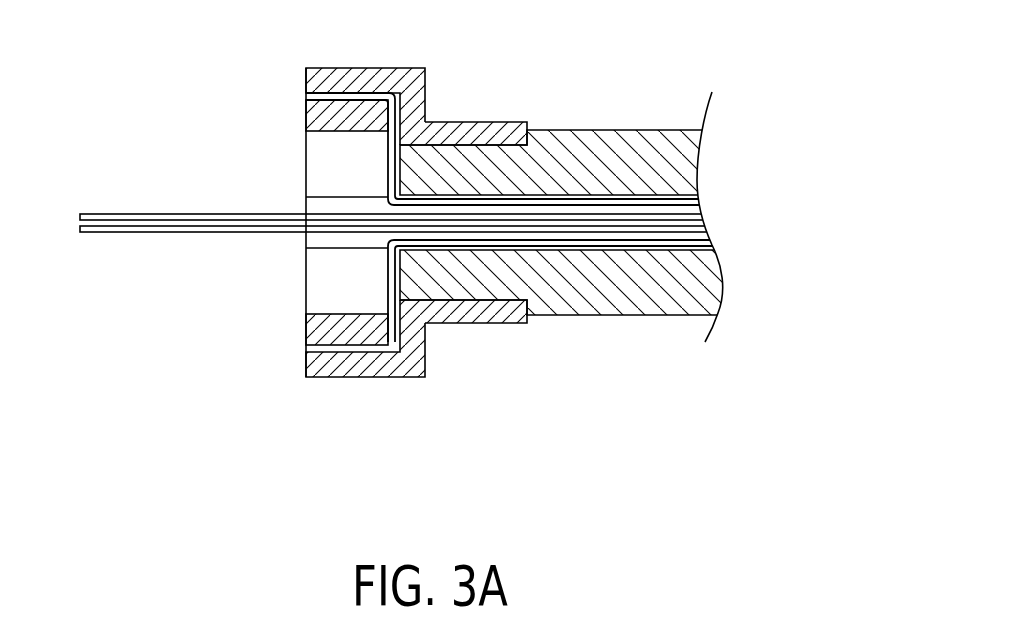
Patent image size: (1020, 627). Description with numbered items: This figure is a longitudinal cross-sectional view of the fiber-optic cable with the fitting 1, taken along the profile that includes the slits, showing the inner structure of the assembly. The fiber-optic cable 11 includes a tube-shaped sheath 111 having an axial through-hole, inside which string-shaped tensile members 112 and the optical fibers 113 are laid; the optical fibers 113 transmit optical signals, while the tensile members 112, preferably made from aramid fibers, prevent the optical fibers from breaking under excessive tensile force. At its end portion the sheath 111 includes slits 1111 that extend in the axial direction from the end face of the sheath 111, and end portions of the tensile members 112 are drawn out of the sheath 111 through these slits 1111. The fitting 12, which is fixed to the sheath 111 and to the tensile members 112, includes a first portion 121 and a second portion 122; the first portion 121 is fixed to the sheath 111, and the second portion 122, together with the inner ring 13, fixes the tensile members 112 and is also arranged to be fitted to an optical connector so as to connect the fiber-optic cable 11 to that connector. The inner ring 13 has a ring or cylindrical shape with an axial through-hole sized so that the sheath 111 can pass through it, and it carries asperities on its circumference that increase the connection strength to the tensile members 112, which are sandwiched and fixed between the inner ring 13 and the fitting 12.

The fiber-optic cable with the fitting 1 is at (797, 568).
The fiber-optic cable 11 is at (628, 378).
The sheath 111 is at (587, 140).
The slits 1111 is at (328, 177).
The tensile members 112 is at (304, 97).
The optical fibers 113 is at (143, 214).
The fitting 12 is at (413, 418).
The first portion 121 is at (485, 323).
The second portion 122 is at (352, 377).
The inner ring 13 is at (305, 118).